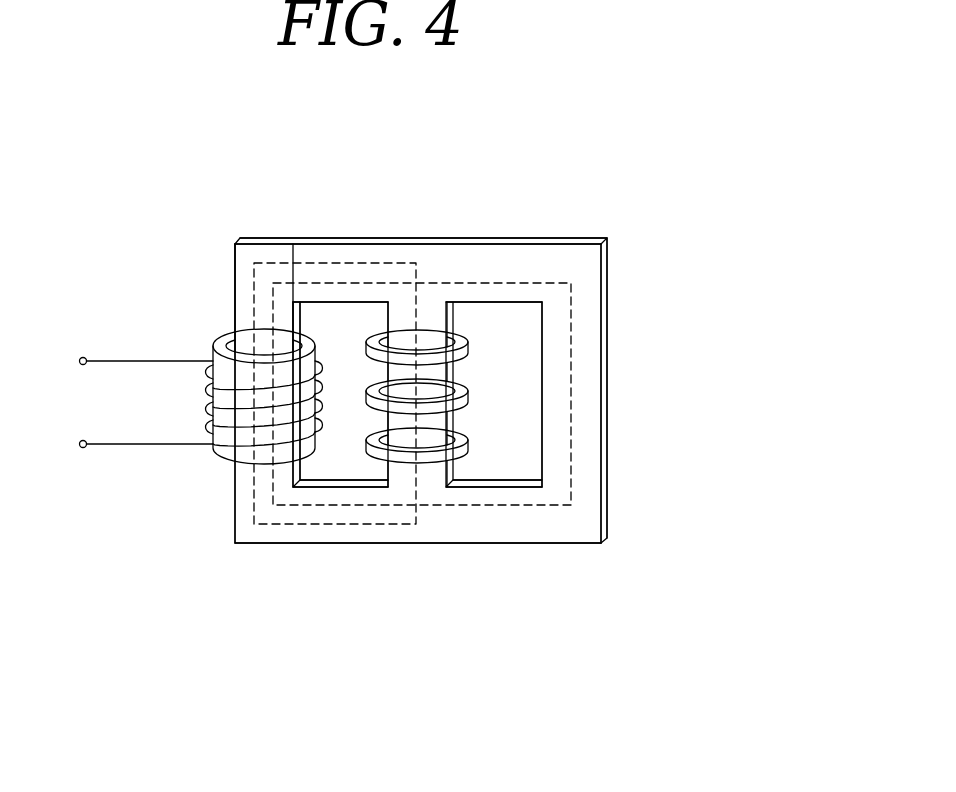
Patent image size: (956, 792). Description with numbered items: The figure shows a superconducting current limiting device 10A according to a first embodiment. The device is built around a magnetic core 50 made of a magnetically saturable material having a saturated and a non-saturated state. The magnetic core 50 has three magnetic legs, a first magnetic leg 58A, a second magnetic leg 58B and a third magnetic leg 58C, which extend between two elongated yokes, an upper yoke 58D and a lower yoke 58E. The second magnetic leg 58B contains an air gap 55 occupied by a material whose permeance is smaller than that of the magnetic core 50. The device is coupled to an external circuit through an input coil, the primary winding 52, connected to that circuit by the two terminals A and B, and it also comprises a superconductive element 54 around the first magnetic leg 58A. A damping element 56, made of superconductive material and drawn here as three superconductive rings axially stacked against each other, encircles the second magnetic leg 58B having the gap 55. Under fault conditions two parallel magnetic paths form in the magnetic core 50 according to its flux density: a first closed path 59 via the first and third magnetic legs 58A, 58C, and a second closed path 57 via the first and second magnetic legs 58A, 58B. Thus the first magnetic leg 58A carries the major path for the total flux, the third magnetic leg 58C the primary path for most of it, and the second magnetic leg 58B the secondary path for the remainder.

The superconducting current limiting device 10A is at (686, 135).
The magnetic core 50 is at (612, 290).
The primary winding 52 is at (177, 447).
The superconductive element 54 is at (212, 353).
The air gap 55 is at (443, 391).
The damping element 56 is at (480, 440).
The second closed path 57 is at (296, 264).
The first magnetic leg 58A is at (242, 297).
The second magnetic leg 58B is at (428, 318).
The third magnetic leg 58C is at (587, 448).
The upper yoke 58D is at (543, 260).
The lower yoke 58E is at (492, 530).
The first closed path 59 is at (470, 283).